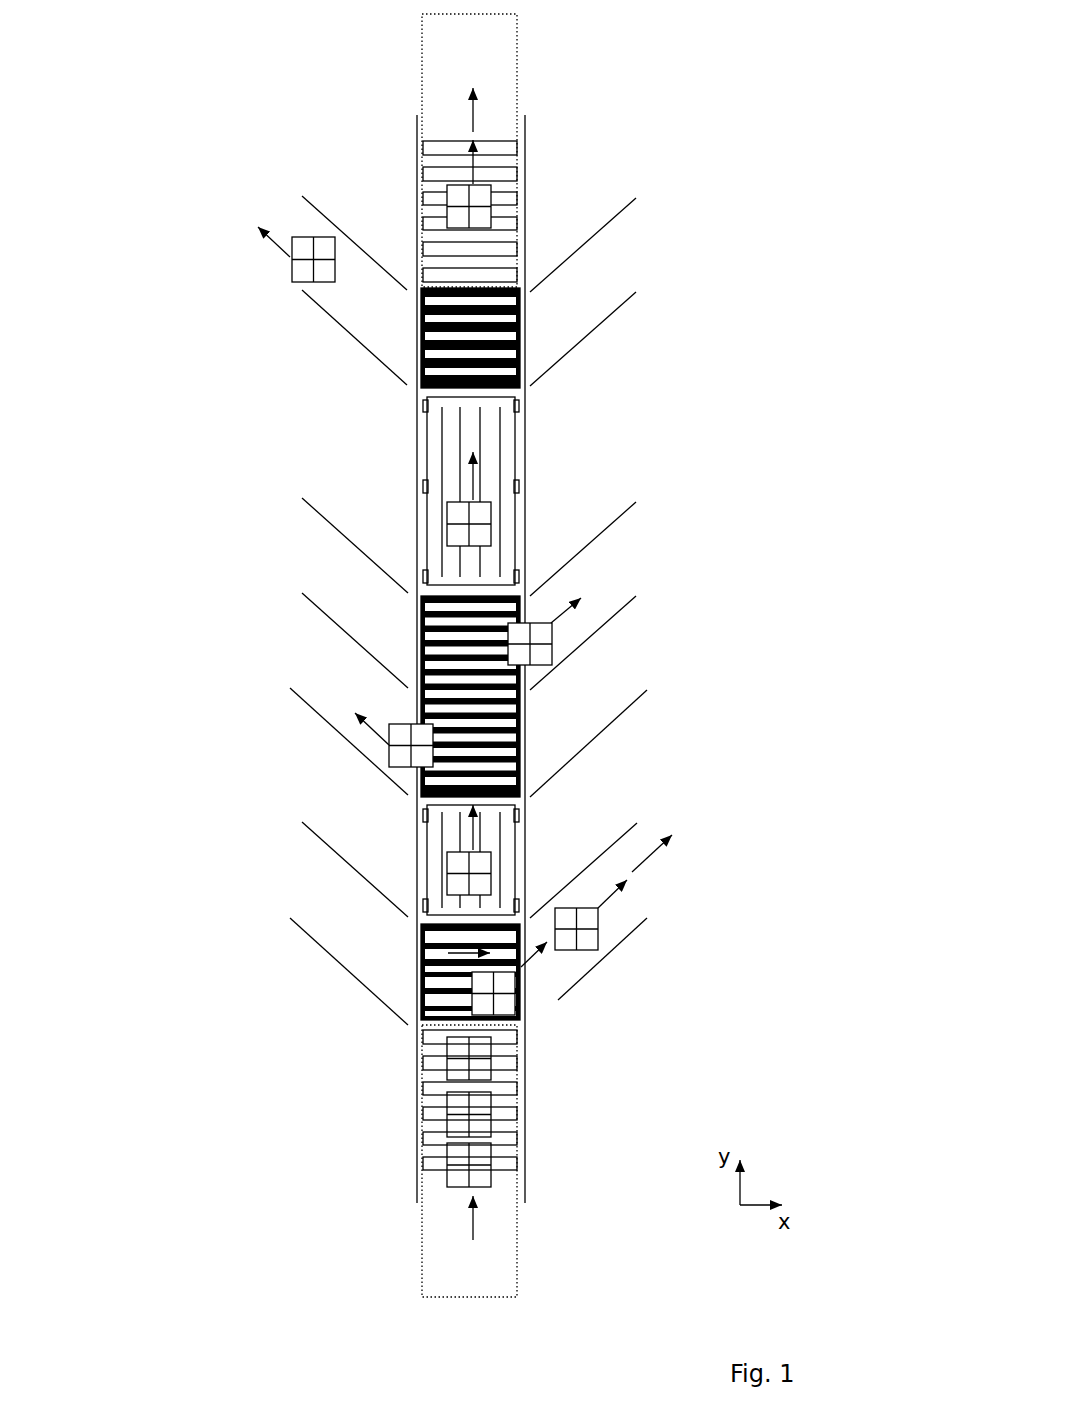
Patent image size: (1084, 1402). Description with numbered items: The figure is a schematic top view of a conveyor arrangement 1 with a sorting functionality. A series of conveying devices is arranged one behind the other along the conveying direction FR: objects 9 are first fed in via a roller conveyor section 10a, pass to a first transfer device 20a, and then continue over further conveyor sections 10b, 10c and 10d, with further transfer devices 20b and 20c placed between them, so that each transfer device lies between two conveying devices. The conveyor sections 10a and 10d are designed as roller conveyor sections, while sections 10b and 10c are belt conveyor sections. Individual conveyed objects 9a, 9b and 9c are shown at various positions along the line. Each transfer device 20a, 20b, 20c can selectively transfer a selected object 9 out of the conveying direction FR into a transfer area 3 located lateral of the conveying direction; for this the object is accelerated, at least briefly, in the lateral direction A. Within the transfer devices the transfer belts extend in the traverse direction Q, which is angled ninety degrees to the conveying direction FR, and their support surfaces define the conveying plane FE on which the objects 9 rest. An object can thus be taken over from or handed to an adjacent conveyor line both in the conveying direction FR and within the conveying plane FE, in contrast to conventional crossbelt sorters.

The conveyor arrangement 1 is at (145, 130).
The transfer area 3 is at (409, 369).
The object 9 is at (491, 200).
The object 9a is at (491, 1075).
The object 9b is at (515, 1010).
The object 9c is at (598, 940).
The conveyor section 10a is at (410, 1030).
The belt conveyor section 10b is at (410, 803).
The belt conveyor section 10c is at (410, 397).
The roller conveyor section 10d is at (410, 137).
The first transfer device 20a is at (421, 930).
The transfer device 20b is at (421, 625).
The transfer device 20c is at (421, 326).
The traverse direction Q is at (451, 957).
The lateral direction A is at (650, 861).
The conveying direction FR is at (474, 112).
The conveying plane FE is at (511, 57).